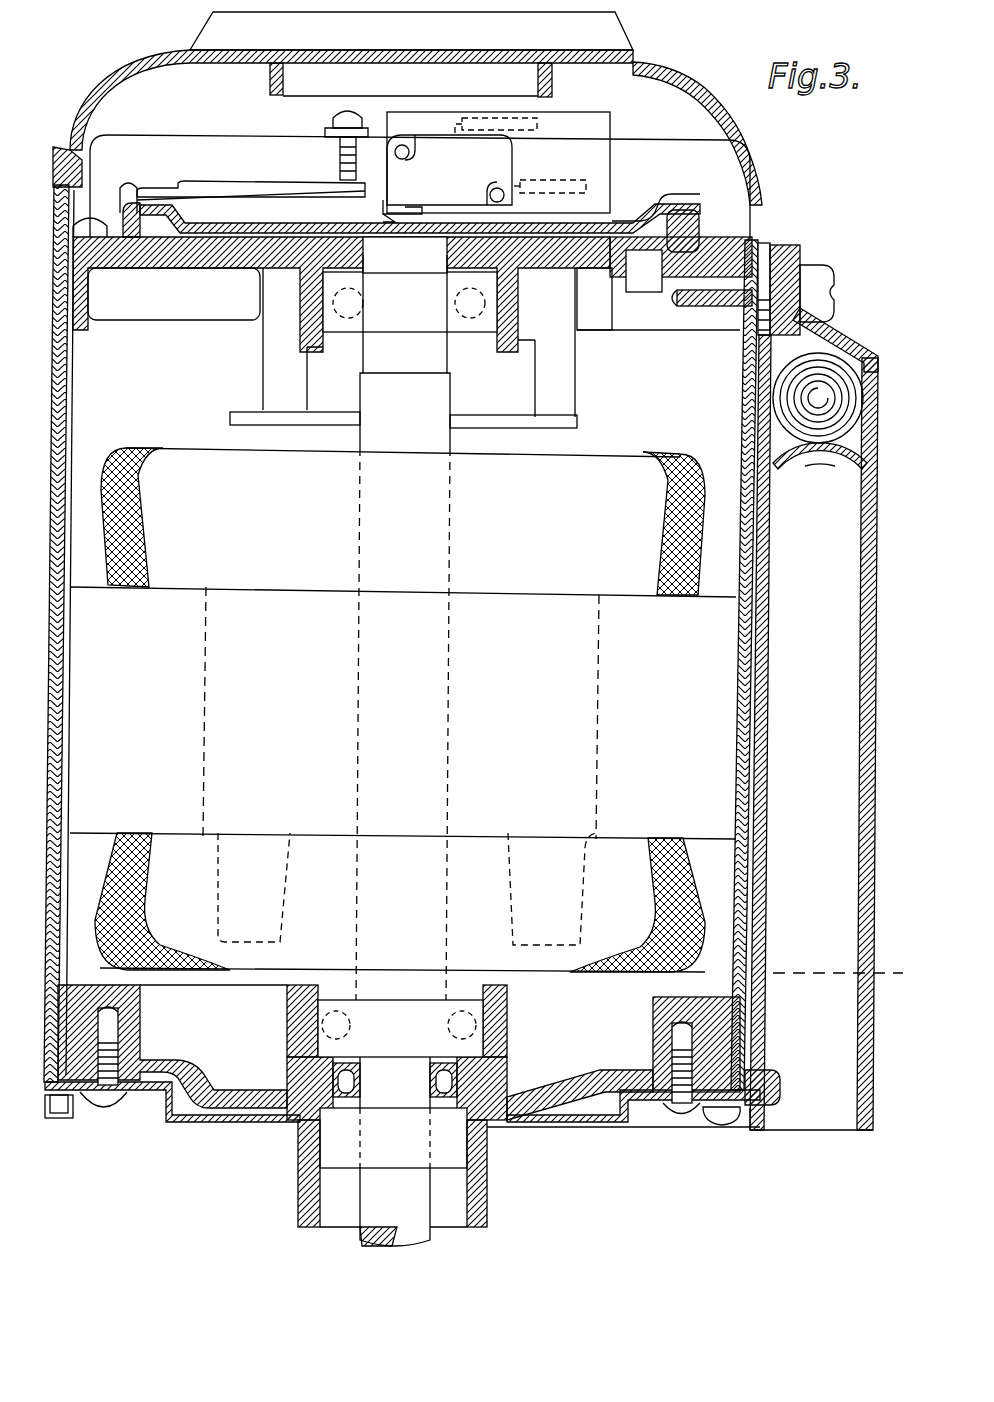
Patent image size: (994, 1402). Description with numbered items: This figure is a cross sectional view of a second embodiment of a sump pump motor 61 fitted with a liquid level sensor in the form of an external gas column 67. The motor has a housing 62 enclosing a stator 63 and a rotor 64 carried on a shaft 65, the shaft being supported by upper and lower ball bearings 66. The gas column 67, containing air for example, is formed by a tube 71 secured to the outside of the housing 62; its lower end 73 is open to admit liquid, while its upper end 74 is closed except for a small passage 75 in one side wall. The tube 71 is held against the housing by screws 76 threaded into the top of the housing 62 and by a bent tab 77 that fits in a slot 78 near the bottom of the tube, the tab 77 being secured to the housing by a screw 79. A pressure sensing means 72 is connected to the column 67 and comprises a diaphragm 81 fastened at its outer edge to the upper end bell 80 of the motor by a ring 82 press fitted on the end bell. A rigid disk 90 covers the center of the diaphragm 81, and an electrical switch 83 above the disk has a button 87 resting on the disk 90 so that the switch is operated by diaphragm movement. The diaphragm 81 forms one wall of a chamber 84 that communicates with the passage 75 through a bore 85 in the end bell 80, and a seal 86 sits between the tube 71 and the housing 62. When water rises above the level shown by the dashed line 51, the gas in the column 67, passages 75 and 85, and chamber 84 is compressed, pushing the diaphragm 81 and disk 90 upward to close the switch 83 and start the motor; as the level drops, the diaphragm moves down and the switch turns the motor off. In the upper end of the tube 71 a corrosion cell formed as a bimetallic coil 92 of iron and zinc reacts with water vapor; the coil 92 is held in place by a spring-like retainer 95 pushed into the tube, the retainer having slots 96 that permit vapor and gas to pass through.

The dashed line 51 is at (800, 970).
The motor 61 is at (222, 1157).
The housing 62 is at (57, 606).
The stator 63 is at (694, 733).
The rotor 64 is at (549, 733).
The shaft 65 is at (430, 422).
The ball bearings 66 is at (493, 325).
The external gas column 67 is at (882, 1096).
The tube 71 is at (872, 626).
The pressure sensing means 72 is at (650, 125).
The lower end 73 is at (828, 1136).
The upper end 74 is at (832, 330).
The passage 75 is at (785, 300).
The screws 76 is at (830, 285).
The bent tab 77 is at (760, 1105).
The slot 78 is at (780, 1085).
The screw 79 is at (682, 1114).
The upper end bell 80 is at (672, 222).
The diaphragm 81 is at (645, 221).
The ring 82 is at (697, 240).
The electrical switch 83 is at (500, 172).
The chamber 84 is at (658, 282).
The bore 85 is at (705, 306).
The seal 86 is at (768, 285).
The button 87 is at (412, 210).
The rigid disk 90 is at (283, 224).
The coil 92 is at (855, 402).
The retainer 95 is at (831, 466).
The slots 96 is at (797, 464).